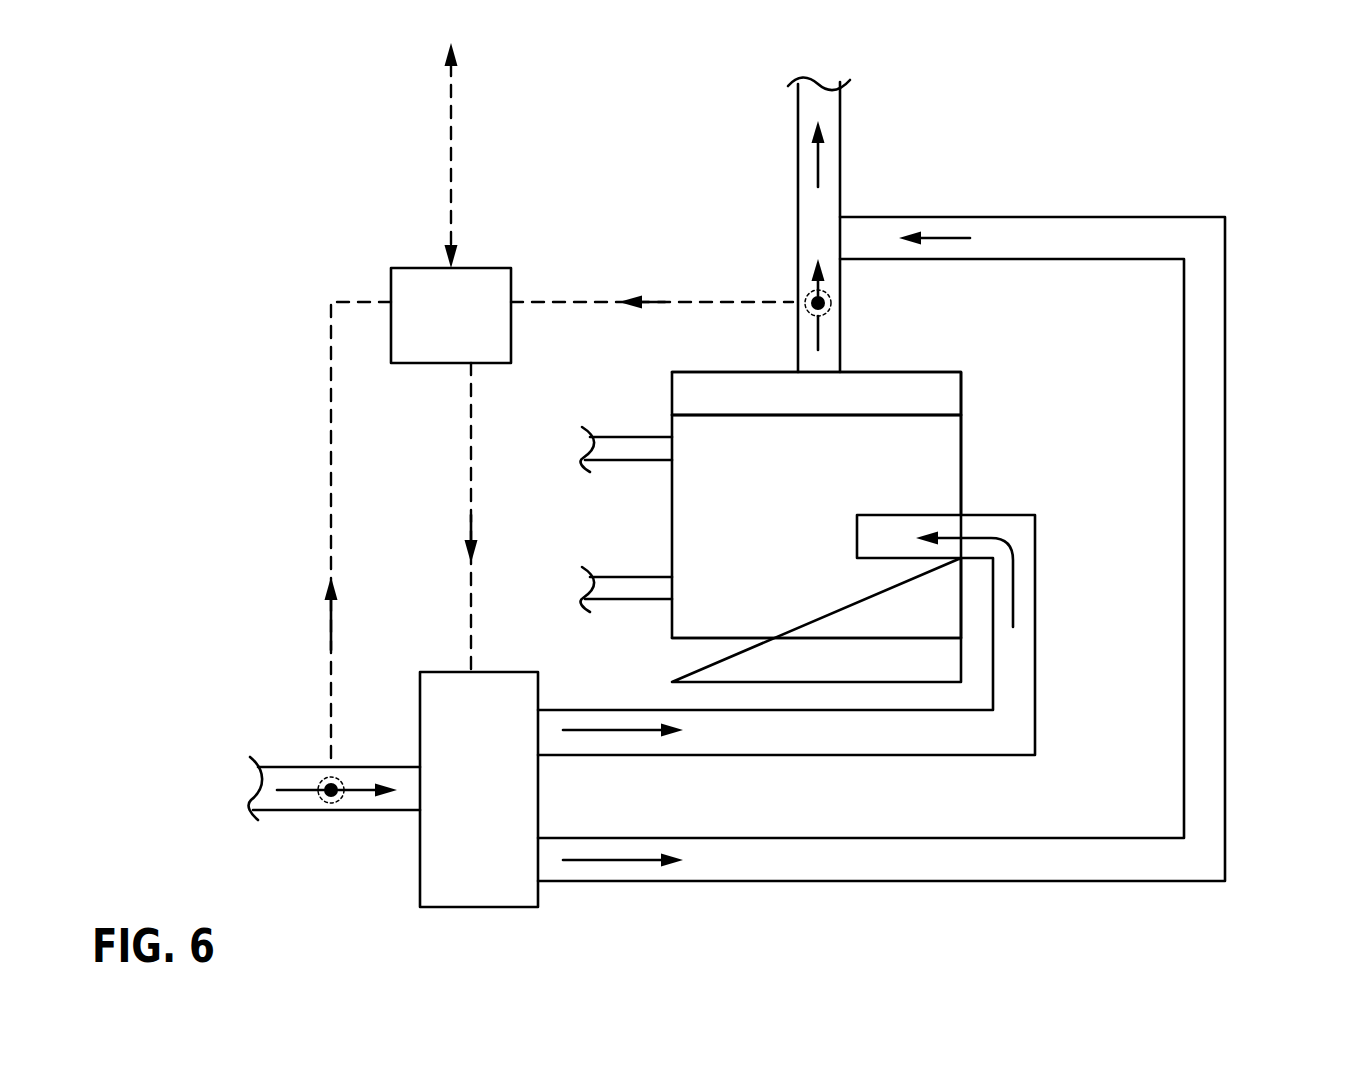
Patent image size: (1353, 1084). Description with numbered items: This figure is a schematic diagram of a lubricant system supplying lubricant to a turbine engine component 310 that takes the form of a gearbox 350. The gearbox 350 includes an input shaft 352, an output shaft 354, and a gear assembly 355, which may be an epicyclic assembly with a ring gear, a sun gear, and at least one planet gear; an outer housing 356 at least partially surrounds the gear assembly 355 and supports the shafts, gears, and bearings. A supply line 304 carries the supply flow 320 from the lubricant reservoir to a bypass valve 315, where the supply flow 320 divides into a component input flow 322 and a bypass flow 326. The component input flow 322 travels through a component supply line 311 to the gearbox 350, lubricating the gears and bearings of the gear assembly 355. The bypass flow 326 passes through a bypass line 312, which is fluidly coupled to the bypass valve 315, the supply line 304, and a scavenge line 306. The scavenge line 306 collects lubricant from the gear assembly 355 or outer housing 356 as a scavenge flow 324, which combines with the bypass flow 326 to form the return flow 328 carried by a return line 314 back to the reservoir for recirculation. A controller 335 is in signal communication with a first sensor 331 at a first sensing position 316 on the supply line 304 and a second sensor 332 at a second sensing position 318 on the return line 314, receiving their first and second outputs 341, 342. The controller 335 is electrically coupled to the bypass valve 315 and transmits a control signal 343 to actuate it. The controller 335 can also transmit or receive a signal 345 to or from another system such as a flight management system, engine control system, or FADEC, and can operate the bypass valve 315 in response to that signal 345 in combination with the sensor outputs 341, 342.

The supply line 304 is at (283, 803).
The scavenge line 306 is at (798, 295).
The turbine engine component 310 is at (982, 425).
The component supply line 311 is at (1035, 660).
The bypass line 312 is at (1227, 328).
The return line 314 is at (798, 128).
The bypass valve 315 is at (491, 797).
The first sensing position 316 is at (323, 802).
The second sensing position 318 is at (826, 311).
The supply flow 320 is at (357, 790).
The component input flow 322 is at (1015, 573).
The scavenge flow 324 is at (817, 327).
The bypass flow 326 is at (942, 235).
The return flow 328 is at (820, 158).
The first sensor 331 is at (336, 784).
The second sensor 332 is at (833, 303).
The controller 335 is at (460, 325).
The first output 341 is at (331, 615).
The second output 342 is at (657, 297).
The control signal 343 is at (471, 523).
The signal 345 is at (453, 107).
The gearbox 350 is at (958, 361).
The input shaft 352 is at (643, 450).
The output shaft 354 is at (620, 588).
The gear assembly 355 is at (790, 533).
The outer housing 356 is at (687, 402).